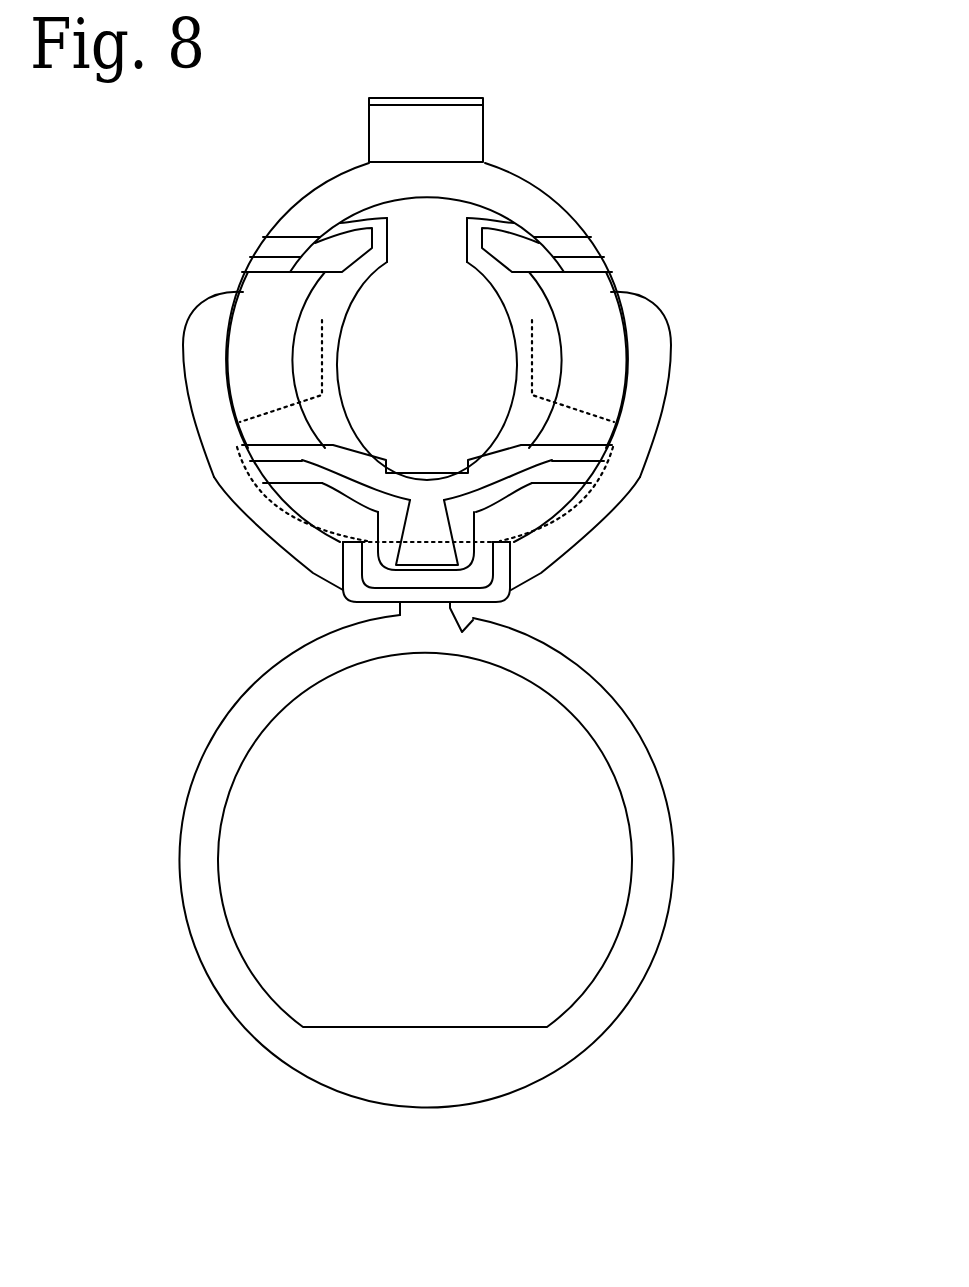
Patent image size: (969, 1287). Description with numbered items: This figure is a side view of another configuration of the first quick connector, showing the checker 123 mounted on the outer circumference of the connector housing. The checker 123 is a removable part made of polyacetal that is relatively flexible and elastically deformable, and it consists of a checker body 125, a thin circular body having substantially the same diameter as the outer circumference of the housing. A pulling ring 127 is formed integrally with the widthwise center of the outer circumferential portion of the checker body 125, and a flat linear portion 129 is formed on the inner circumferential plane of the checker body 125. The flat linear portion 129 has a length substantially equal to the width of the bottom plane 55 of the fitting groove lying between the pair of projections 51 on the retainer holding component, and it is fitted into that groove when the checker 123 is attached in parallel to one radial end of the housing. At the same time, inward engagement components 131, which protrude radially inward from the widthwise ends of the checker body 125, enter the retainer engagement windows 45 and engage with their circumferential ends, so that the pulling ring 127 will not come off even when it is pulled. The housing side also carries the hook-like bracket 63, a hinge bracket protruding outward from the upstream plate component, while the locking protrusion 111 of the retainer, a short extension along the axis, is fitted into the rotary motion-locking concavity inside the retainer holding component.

The bracket 63 is at (430, 96).
The inward engagement component 131 is at (532, 320).
The retainer engagement window 45 is at (625, 360).
The checker body 125 is at (640, 502).
The bottom plane 55 is at (477, 542).
The checker 123 is at (703, 672).
The flat linear portion 129 is at (370, 541).
The projection 51 is at (352, 582).
The locking protrusion 111 is at (423, 527).
The pulling ring 127 is at (645, 863).